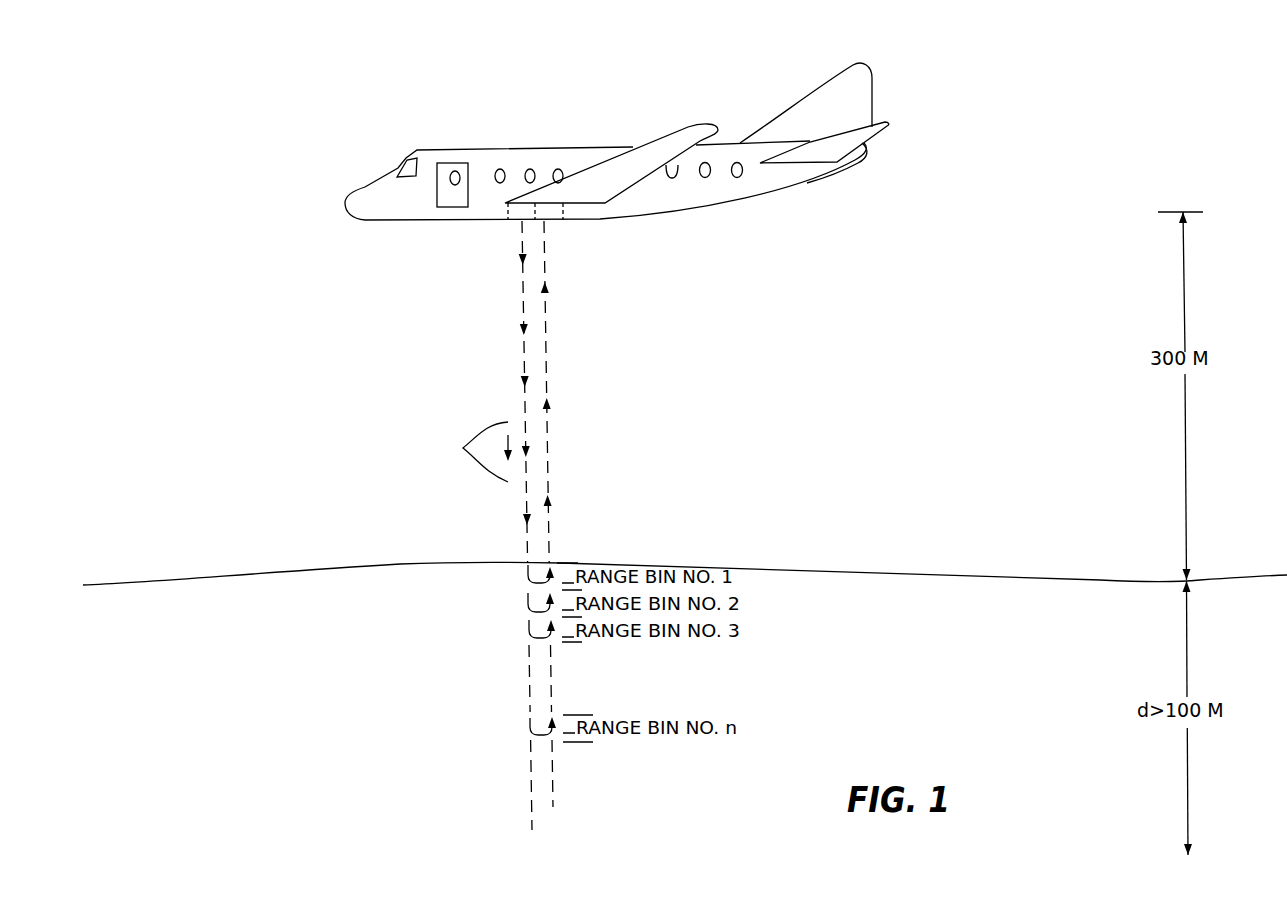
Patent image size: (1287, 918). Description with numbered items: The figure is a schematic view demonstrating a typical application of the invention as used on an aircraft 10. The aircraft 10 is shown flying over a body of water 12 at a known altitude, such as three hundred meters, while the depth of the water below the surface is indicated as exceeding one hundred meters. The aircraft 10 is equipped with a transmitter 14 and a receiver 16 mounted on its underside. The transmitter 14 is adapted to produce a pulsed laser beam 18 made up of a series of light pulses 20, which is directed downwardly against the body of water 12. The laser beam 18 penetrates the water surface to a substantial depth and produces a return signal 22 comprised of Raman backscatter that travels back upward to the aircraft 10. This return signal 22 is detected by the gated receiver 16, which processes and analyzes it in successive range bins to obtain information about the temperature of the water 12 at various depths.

The aircraft 10 is at (563, 147).
The body of water 12 is at (378, 562).
The transmitter 14 is at (512, 222).
The receiver 16 is at (555, 222).
The pulsed laser beam 18 is at (523, 355).
The light pulses 20 is at (477, 434).
The return signal 22 is at (550, 533).